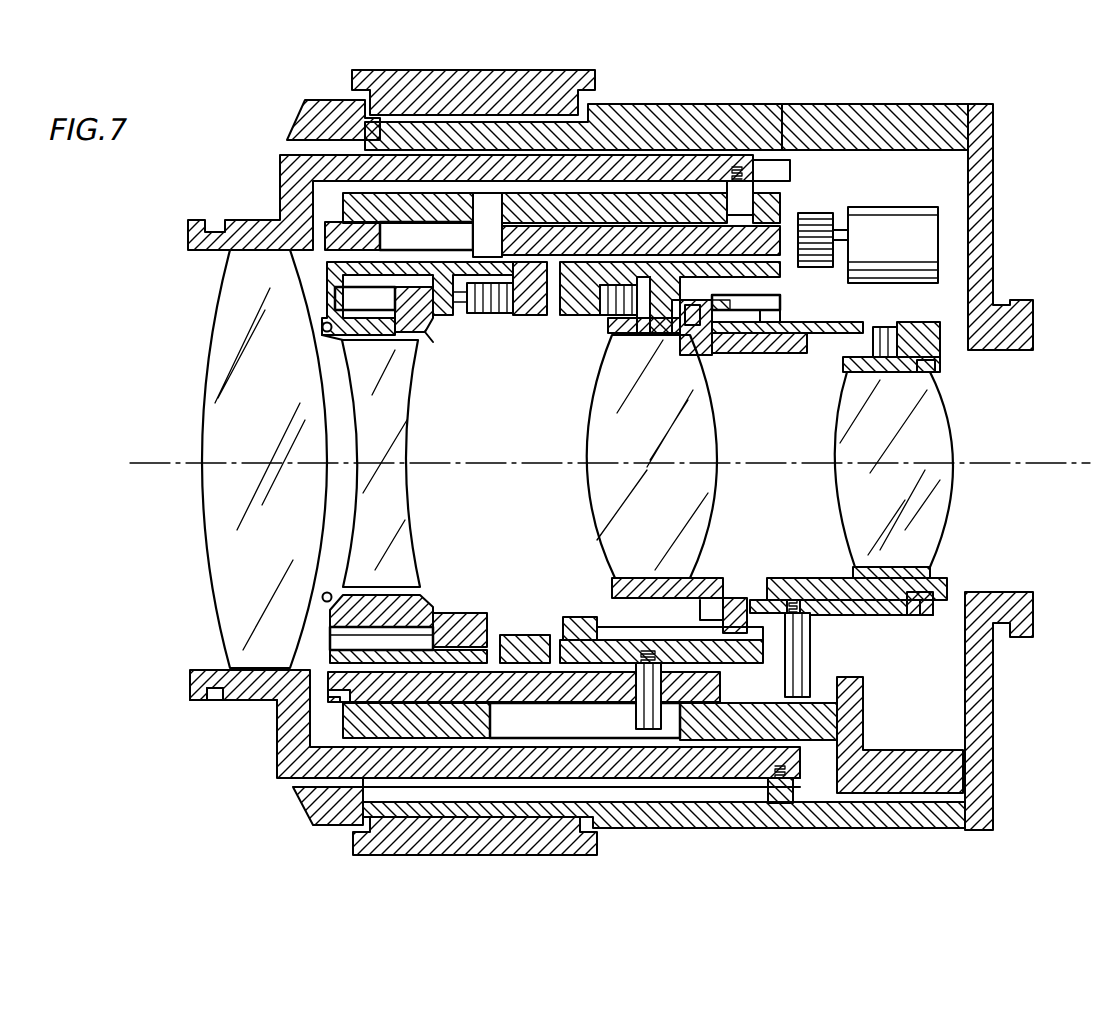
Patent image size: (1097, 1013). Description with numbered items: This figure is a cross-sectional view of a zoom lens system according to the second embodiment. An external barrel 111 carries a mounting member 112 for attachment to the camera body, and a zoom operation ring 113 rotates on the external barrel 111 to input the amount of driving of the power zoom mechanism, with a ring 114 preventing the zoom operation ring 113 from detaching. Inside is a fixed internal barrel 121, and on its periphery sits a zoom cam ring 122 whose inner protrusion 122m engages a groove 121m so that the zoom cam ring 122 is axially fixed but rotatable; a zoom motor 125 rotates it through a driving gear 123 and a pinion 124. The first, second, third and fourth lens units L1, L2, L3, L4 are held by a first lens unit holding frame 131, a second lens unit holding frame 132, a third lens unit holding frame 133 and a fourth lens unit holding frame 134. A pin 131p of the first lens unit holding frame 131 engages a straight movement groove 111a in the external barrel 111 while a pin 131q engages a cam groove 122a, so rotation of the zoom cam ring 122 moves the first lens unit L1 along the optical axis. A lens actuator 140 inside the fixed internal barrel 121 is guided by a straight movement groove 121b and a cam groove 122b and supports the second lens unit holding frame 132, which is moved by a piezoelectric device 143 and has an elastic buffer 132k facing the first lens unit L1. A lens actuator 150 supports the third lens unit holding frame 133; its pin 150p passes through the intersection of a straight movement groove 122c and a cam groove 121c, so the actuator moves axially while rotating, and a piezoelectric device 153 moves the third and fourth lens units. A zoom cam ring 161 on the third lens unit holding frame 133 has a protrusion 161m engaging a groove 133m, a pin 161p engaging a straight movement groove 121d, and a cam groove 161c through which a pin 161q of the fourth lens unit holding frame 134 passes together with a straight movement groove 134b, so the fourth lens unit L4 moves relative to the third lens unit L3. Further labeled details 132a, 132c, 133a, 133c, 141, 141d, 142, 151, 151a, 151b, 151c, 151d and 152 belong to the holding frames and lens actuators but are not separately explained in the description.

The external barrel 111 is at (952, 118).
The straight movement groove 111a is at (717, 793).
The mounting member 112 is at (993, 185).
The zoom operation ring 113 is at (352, 73).
The detachment preventing ring 114 is at (297, 122).
The fixed internal barrel 121 is at (585, 230).
The straight movement groove 121b is at (403, 233).
The cam groove 121c is at (643, 693).
The straight movement groove 121d is at (813, 743).
The groove 121m is at (340, 687).
The zoom cam ring 122 is at (340, 203).
The cam groove 122a is at (778, 285).
The cam groove 122b is at (488, 233).
The straight movement groove 122c is at (563, 722).
The protrusion 122m is at (335, 710).
The driving gear 123 is at (817, 237).
The pinion 124 is at (836, 233).
The zoom motor 125 is at (915, 257).
The first lens unit holding frame 131 is at (205, 668).
The pin 131p is at (797, 805).
The pin 131q is at (770, 185).
The second lens unit holding frame 132 is at (417, 385).
The second lens frame insert 132a is at (398, 300).
The second lens frame lower part 132c is at (490, 636).
The buffer 132k is at (320, 328).
The third lens unit holding frame 133 is at (718, 578).
The third lens frame upper part 133a is at (655, 358).
The third lens frame step 133c is at (747, 600).
The groove 133m is at (958, 587).
The fourth lens unit holding frame 134 is at (950, 578).
The straight movement groove 134b is at (852, 375).
The lens actuator 140 is at (517, 225).
The cam ring lower block 141 is at (520, 643).
The cam ring lower flange 141d is at (425, 647).
The lens seat flange 142 is at (375, 322).
The piezoelectric device 143 is at (513, 318).
The lens actuator 150 is at (610, 318).
The pin 150p is at (648, 728).
The guide ring lower part 151 is at (568, 617).
The guide ring upper flange 151a is at (830, 345).
The guide ring inner flange 151b is at (725, 300).
The guide ring block 151c is at (660, 290).
The guide ring lower flange 151d is at (760, 598).
The guide block 152 is at (735, 355).
The piezoelectric device 153 is at (690, 300).
The zoom cam ring 161 is at (930, 310).
The cam groove 161c is at (876, 325).
The protrusion 161m is at (927, 607).
The pin 161p is at (810, 648).
The pin 161q is at (925, 372).
The first lens unit L1 is at (217, 390).
The second lens unit L2 is at (388, 437).
The third lens unit L3 is at (597, 433).
The fourth lens unit L4 is at (937, 436).